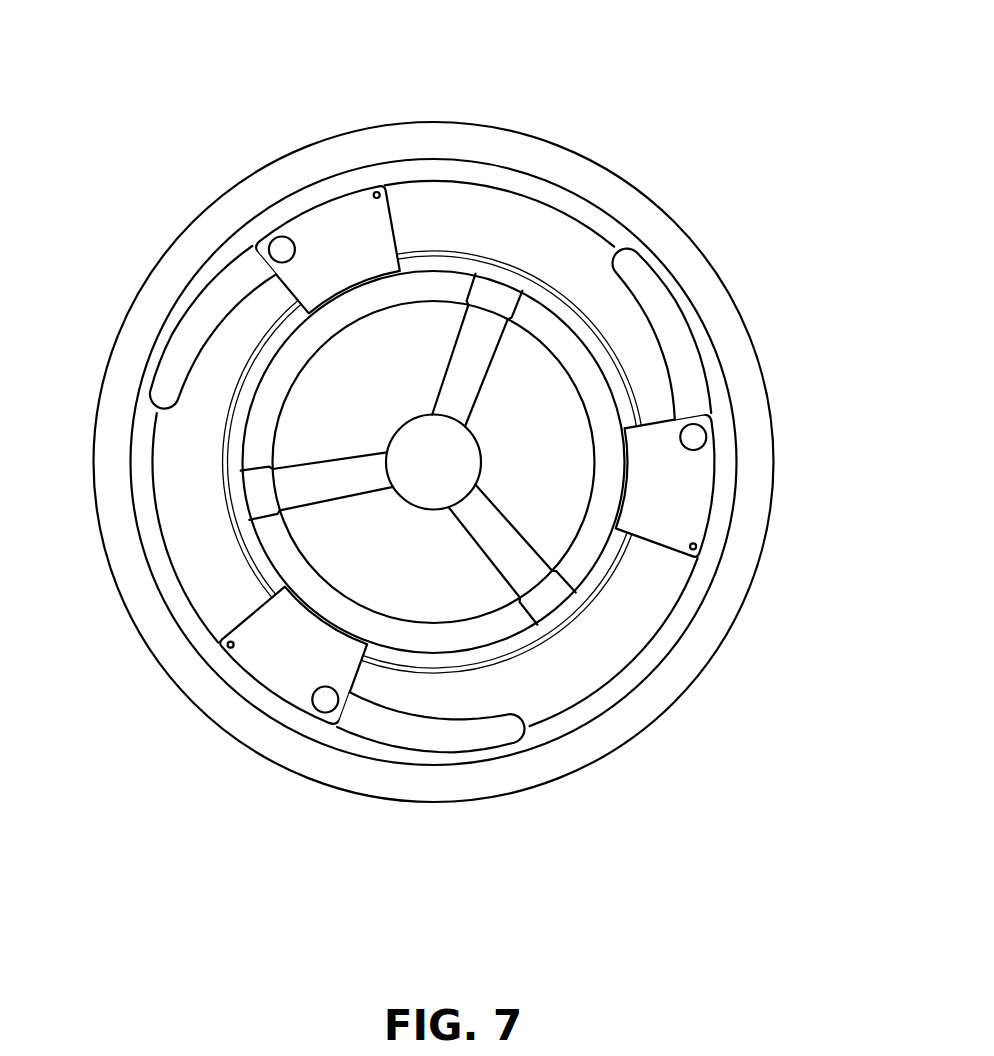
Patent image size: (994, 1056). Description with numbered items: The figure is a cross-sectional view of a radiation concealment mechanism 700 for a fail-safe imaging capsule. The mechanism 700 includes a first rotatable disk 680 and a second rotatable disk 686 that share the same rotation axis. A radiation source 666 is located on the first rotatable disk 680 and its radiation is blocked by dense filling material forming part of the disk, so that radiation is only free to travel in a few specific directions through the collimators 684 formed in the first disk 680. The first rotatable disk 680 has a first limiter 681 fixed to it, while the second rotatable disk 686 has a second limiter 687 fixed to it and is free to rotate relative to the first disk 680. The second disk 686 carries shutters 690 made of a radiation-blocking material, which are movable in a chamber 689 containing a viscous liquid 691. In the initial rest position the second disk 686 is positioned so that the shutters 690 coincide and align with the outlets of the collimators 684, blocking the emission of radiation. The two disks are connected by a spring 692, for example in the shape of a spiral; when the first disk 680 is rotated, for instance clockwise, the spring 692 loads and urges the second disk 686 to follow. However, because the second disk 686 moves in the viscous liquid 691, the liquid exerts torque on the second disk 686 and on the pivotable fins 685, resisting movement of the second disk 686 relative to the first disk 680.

The radiation concealment mechanism 700 is at (187, 790).
The pivotable fins 685 is at (160, 333).
The chamber 689 is at (487, 205).
The viscous liquid 691 is at (432, 208).
The first limiter 681 is at (278, 435).
The first rotatable disk 680 is at (397, 543).
The radiation source 666 is at (432, 467).
The collimators 684 is at (480, 372).
The spring 692 is at (620, 560).
The second limiter 687 is at (317, 607).
The second rotatable disk 686 is at (583, 703).
The shutters 690 is at (303, 274).